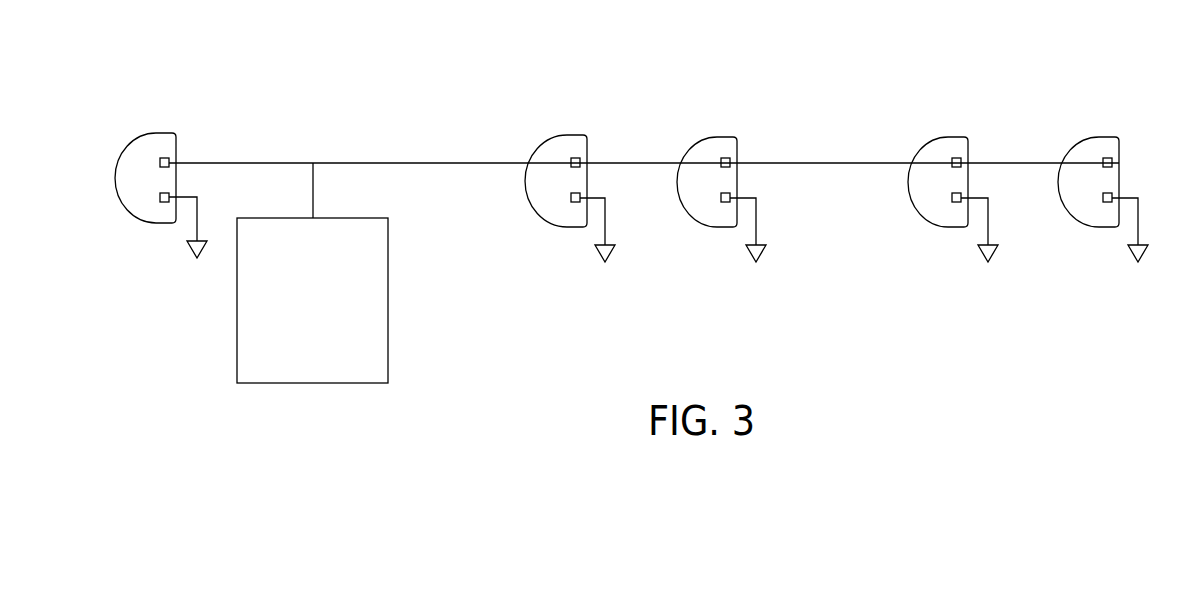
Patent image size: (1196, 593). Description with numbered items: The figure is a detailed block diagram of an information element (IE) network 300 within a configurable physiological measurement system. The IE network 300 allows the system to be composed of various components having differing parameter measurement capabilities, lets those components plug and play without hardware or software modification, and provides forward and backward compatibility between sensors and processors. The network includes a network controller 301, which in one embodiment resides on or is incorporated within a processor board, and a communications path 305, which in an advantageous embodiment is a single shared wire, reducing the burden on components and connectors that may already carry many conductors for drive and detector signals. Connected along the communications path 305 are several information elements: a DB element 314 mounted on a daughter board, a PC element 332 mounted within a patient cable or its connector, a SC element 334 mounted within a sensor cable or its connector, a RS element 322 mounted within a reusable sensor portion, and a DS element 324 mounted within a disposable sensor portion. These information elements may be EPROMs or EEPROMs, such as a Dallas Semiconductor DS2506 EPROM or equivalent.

The information element network 300 is at (689, 68).
The network controller 301 is at (388, 273).
The communications path 305 is at (435, 163).
The DB element 314 is at (162, 133).
The RS element 322 is at (953, 137).
The DS element 324 is at (1105, 137).
The PC element 332 is at (572, 135).
The SC element 334 is at (722, 137).